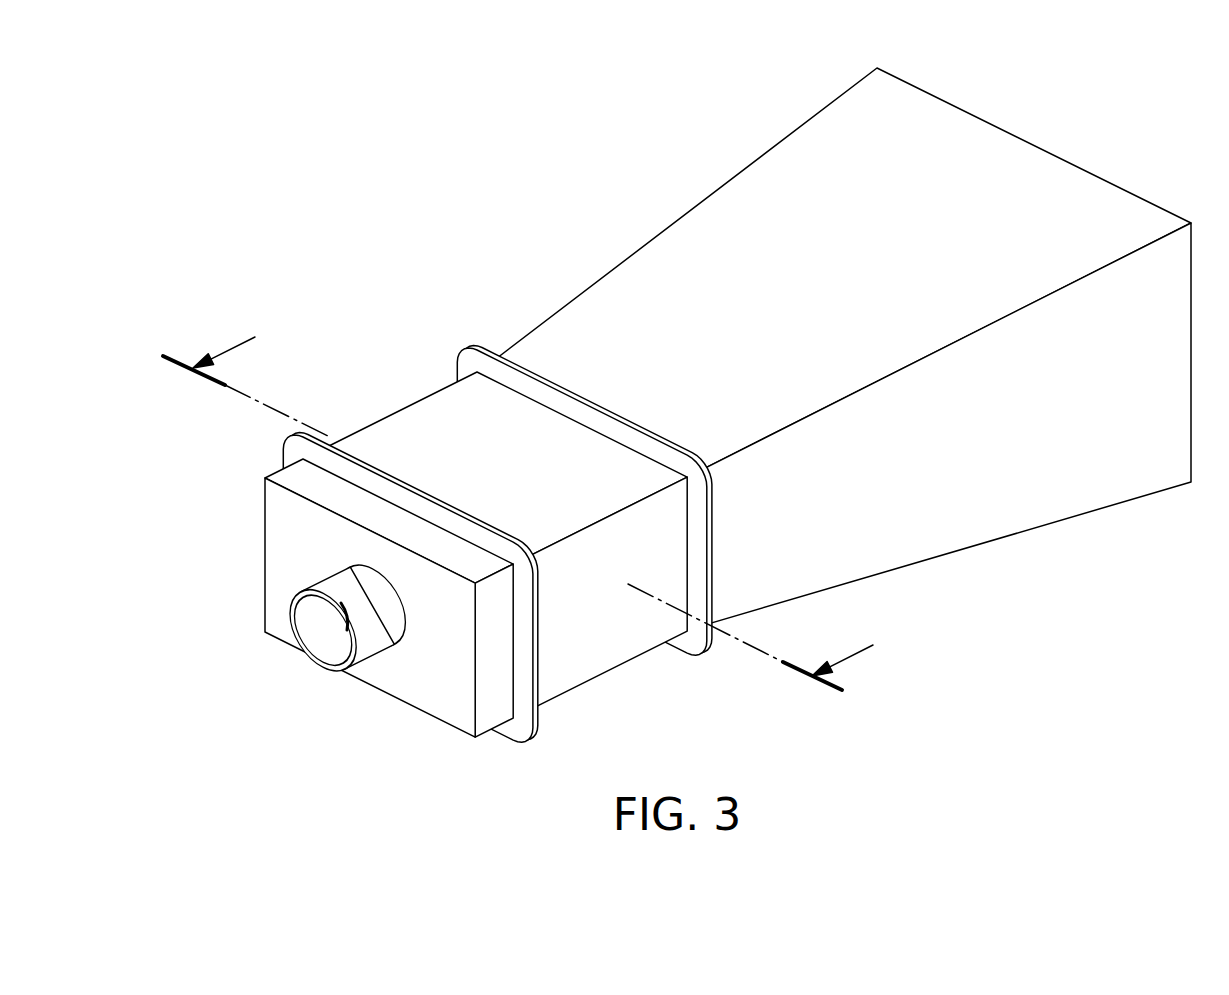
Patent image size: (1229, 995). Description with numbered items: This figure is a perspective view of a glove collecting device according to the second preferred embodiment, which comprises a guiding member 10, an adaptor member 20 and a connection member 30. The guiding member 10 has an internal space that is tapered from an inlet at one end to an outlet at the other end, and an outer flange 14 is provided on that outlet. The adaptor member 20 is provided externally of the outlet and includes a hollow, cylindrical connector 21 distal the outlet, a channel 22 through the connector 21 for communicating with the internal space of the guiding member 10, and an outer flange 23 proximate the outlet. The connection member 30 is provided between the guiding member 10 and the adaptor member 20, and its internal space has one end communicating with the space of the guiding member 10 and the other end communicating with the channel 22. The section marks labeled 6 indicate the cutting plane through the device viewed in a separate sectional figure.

The guiding member 10 is at (670, 248).
The outer flange 14 is at (470, 355).
The adaptor member 20 is at (280, 504).
The hollow, cylindrical connector 21 is at (340, 585).
The channel 22 is at (316, 644).
The outer flange 23 is at (522, 678).
The connection member 30 is at (423, 418).
The section line 6- 6 is at (535, 497).